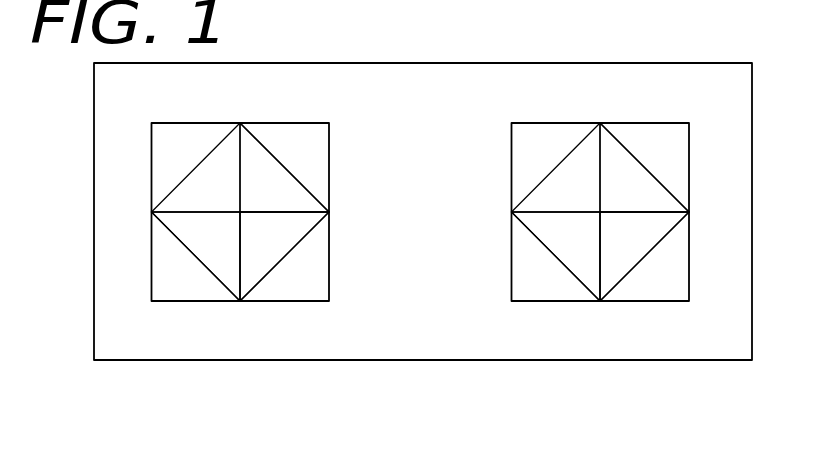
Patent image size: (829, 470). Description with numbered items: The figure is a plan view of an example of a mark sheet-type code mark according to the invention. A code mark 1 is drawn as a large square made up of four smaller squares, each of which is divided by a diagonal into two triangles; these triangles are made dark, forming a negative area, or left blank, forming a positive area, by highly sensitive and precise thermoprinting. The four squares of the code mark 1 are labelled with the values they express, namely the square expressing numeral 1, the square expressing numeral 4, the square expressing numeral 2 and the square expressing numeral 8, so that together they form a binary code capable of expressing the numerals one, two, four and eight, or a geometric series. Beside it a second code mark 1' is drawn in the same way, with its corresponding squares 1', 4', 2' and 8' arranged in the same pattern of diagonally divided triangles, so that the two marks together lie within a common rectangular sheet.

The code mark 1 is at (187, 212).
The second light receiving element (four-segment detector) 1' is at (656, 212).
The square expressing numeral 4 is at (284, 167).
The square expressing numeral 2 is at (196, 256).
The square expressing numeral 8 is at (284, 256).
The detector segment 4' is at (644, 167).
The detector segment 2' is at (556, 256).
The detector segment 8' is at (644, 256).